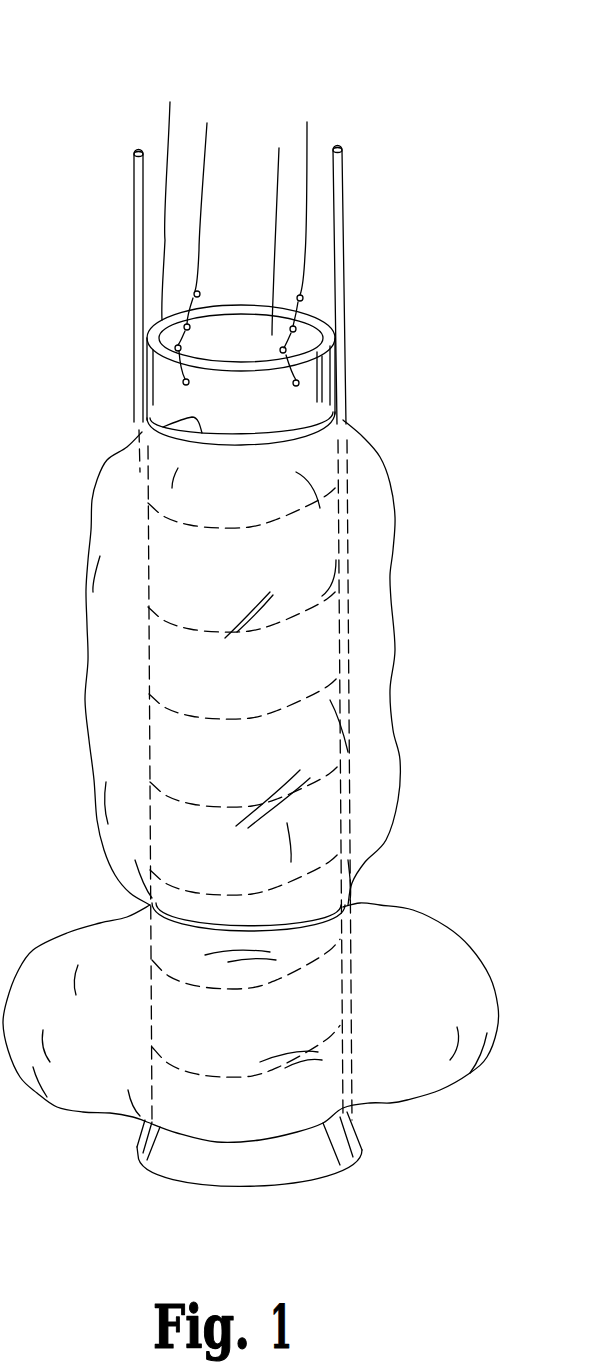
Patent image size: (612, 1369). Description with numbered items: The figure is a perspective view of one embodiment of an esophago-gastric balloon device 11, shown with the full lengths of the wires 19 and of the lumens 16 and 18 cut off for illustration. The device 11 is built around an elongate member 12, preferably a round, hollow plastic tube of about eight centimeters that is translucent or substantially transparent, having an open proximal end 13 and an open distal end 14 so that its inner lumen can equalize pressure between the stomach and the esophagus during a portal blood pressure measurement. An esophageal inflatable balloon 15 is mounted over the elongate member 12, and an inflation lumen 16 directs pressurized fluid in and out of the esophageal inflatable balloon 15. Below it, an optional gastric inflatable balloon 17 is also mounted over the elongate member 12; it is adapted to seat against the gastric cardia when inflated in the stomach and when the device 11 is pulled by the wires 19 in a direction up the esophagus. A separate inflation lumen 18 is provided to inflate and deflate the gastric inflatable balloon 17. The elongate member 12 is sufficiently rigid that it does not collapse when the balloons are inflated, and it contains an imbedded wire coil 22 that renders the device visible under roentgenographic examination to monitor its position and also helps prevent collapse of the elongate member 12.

The esophago-gastric balloon device 11 is at (378, 88).
The elongate member 12 is at (327, 412).
The proximal end 13 is at (246, 272).
The distal end 14 is at (250, 1212).
The esophageal inflatable balloon 15 is at (92, 500).
The inflation lumen 16 is at (134, 226).
The gastric inflatable balloon 17 is at (463, 942).
The separate inflation lumen 18 is at (344, 215).
The wires 19 is at (171, 130).
The imbedded wire coil 22 is at (163, 427).